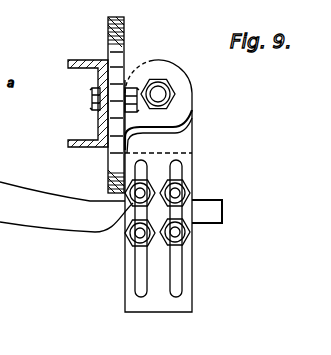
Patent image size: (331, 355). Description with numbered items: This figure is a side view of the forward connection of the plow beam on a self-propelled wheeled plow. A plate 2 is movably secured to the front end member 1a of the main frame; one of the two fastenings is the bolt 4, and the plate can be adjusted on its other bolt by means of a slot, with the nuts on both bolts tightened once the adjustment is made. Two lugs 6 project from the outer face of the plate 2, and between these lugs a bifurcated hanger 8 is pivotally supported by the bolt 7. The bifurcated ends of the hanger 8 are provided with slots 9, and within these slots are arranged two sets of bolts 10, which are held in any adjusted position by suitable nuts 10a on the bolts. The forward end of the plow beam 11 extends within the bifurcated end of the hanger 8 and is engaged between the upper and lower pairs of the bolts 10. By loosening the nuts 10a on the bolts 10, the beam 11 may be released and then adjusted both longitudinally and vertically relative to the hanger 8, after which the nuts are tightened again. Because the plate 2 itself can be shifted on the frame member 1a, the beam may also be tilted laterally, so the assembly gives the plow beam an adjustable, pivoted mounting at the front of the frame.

The front end member 1a is at (98, 81).
The plate 2 is at (124, 44).
The bolt 4 is at (93, 105).
The lugs 6 is at (192, 97).
The bolt 7 is at (163, 89).
The bifurcated hanger 8 is at (188, 138).
The slots 9 is at (139, 281).
The bolts 10 is at (127, 240).
The nuts 10a is at (204, 193).
The plow beam 11 is at (66, 228).